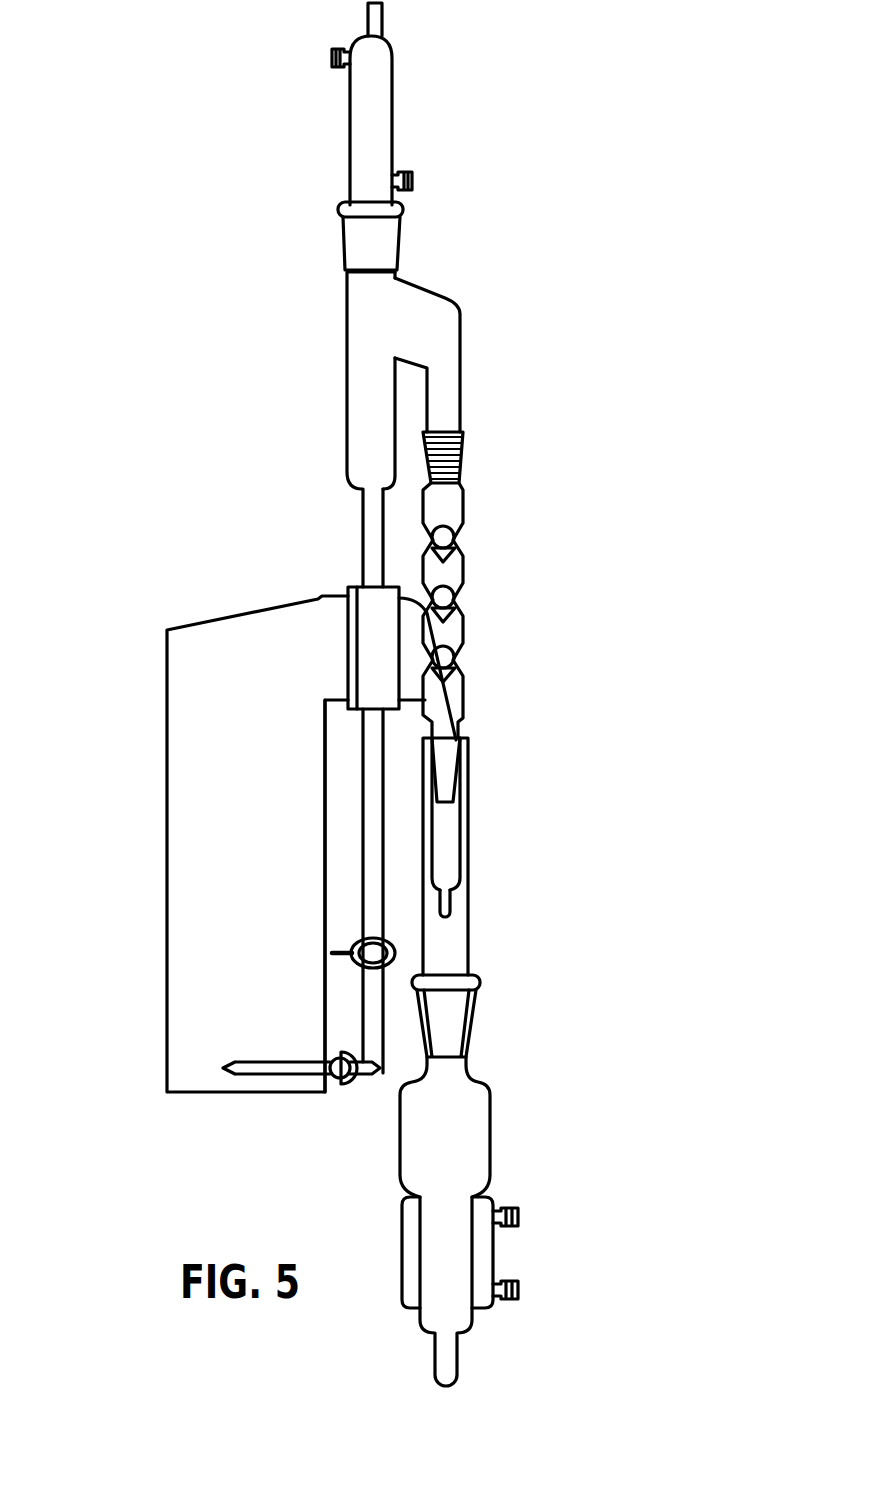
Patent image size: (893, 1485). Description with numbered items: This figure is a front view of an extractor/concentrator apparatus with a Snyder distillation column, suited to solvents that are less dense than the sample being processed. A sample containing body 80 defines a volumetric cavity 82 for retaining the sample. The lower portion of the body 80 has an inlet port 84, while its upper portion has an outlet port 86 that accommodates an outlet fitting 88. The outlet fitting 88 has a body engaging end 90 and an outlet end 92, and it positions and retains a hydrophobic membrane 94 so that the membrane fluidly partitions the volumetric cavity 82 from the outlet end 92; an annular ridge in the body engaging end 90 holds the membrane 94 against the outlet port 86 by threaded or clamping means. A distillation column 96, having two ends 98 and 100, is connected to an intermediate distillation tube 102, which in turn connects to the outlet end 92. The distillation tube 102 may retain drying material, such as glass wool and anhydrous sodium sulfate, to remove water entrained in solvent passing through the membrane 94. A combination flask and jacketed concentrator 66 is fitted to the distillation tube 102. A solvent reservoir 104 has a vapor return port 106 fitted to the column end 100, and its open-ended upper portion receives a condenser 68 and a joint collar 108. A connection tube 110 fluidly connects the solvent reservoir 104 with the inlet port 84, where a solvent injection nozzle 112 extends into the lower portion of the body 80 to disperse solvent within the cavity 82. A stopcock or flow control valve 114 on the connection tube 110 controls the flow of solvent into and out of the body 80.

The combination flask and jacketed concentrator 66 is at (491, 1140).
The condenser 68 is at (394, 86).
The sample containing body 80 is at (167, 768).
The volumetric cavity 82 is at (213, 965).
The inlet port 84 is at (336, 1085).
The outlet port 86 is at (335, 595).
The outlet fitting 88 is at (420, 598).
The body engaging end 90 is at (395, 585).
The outlet end 92 is at (451, 911).
The hydrophobic membrane 94 is at (363, 663).
The distillation column 96 is at (464, 636).
The distillation column end 98 is at (461, 765).
The distillation column end 100 is at (464, 452).
The intermediate distillation tube 102 is at (468, 843).
The solvent reservoir 104 is at (347, 330).
The vapor return port 106 is at (461, 350).
The joint collar 108 is at (406, 213).
The connection tube 110 is at (362, 518).
The solvent injection nozzle 112 is at (258, 1078).
The flow control valve 114 is at (395, 947).